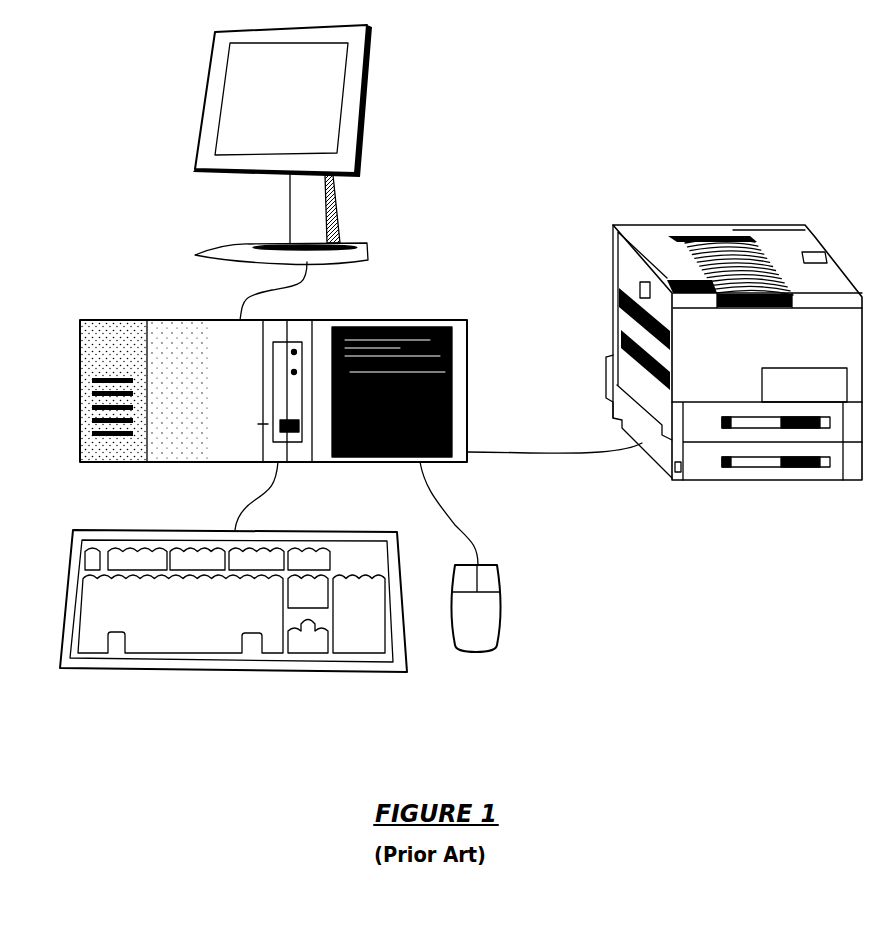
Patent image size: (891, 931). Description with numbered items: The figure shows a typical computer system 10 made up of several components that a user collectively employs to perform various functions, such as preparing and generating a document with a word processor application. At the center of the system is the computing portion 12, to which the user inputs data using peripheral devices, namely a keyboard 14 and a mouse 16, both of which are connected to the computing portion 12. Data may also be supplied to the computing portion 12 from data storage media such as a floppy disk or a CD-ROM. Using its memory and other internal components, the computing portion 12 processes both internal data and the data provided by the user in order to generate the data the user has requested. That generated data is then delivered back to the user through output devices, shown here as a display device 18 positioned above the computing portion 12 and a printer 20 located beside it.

The computer system 10 is at (603, 92).
The computing portion 12 is at (432, 320).
The keyboard 14 is at (68, 560).
The mouse 16 is at (502, 610).
The display device 18 is at (367, 100).
The printer 20 is at (745, 225).